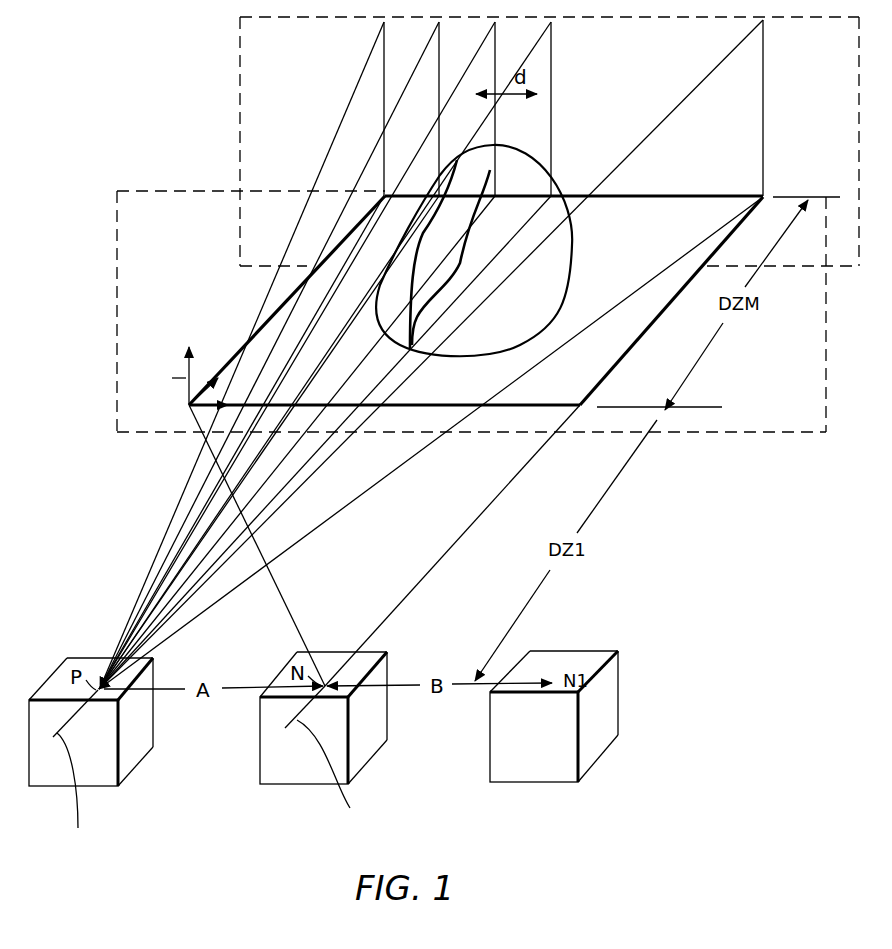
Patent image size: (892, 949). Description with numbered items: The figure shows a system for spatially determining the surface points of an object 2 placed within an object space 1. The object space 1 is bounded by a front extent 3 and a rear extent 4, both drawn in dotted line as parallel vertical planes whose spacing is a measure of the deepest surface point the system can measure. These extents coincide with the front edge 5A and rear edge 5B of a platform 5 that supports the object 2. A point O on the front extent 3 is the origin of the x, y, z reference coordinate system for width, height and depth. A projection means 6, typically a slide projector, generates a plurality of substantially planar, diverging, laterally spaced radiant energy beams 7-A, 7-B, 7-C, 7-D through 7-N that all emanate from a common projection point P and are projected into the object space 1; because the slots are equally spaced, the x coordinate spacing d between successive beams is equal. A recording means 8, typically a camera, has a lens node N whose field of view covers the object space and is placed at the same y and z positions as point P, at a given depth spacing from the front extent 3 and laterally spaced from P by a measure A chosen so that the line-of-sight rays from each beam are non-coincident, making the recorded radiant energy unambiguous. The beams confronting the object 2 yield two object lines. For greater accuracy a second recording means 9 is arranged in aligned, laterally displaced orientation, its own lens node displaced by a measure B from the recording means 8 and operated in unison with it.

The object space 1 is at (193, 161).
The object 2 is at (516, 158).
The front extent 3 is at (676, 426).
The rear extent 4 is at (255, 120).
The platform 5 is at (655, 313).
The front edge of platform 5A is at (384, 417).
The rear edge of platform 5B is at (726, 196).
The projection means 6 is at (137, 750).
The radiant energy beam 7-A is at (376, 64).
The radiant energy beam 7-B is at (428, 64).
The radiant energy beam 7-C is at (484, 64).
The radiant energy beam 7-D is at (542, 62).
The radiant energy beam 7-N is at (750, 50).
The recording means 8 is at (365, 745).
The second recording means 9 is at (590, 750).